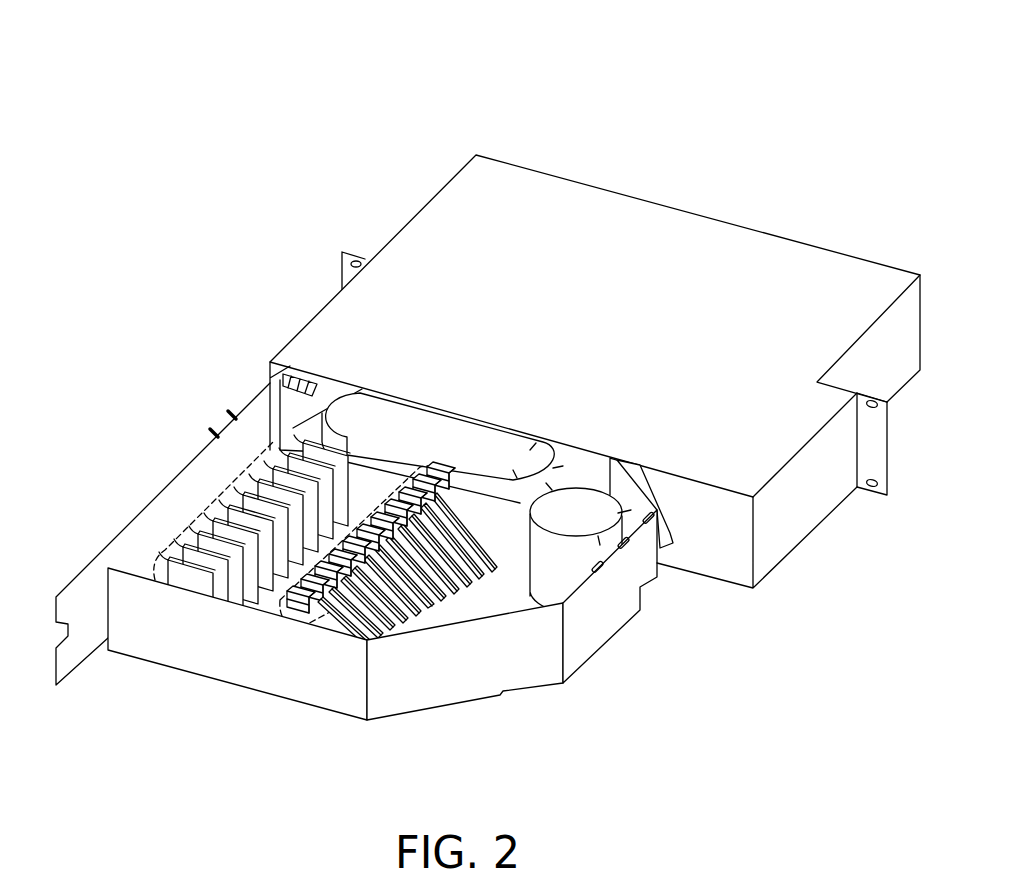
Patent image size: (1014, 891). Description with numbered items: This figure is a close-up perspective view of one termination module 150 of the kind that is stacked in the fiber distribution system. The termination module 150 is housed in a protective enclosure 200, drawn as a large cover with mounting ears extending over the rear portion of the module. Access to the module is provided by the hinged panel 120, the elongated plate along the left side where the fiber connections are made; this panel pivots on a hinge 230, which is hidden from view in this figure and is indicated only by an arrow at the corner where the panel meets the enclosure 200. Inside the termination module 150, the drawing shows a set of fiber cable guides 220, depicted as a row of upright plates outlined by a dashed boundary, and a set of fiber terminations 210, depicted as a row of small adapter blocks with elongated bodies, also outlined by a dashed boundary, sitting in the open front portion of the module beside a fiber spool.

The termination module 150 is at (73, 98).
The protective enclosure 200 is at (730, 250).
The hinge 230 is at (253, 366).
The hinged panel 120 is at (110, 548).
The fiber cable guides 220 is at (175, 588).
The fiber terminations 210 is at (290, 617).